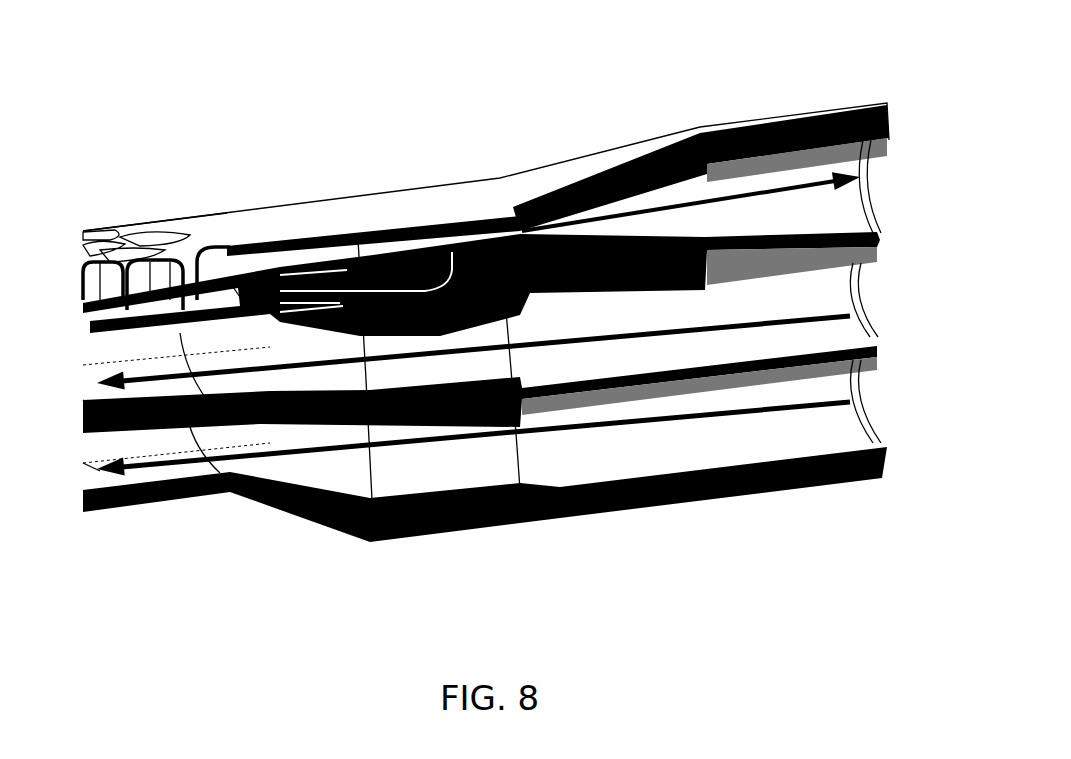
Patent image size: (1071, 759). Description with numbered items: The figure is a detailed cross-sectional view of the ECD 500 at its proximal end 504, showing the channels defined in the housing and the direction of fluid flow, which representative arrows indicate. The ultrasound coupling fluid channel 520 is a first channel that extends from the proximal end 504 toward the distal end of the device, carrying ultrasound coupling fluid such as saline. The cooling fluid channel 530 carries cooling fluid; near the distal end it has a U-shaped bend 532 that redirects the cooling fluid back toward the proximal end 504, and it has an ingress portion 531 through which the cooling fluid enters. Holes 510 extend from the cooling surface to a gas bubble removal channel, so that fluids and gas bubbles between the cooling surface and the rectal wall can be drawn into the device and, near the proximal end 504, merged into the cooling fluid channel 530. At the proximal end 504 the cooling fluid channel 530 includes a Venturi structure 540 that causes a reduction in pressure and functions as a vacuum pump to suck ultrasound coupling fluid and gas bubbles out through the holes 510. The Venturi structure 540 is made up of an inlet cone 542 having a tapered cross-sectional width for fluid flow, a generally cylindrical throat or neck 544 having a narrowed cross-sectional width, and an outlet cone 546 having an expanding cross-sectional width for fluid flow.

The ECD 500 is at (77, 80).
The proximal end 504 is at (915, 256).
The holes 510 is at (123, 228).
The ultrasound coupling fluid channel 520 is at (778, 443).
The cooling fluid channel 530 is at (75, 339).
The ingress portion 531 is at (902, 321).
The U-shaped bend 532 is at (910, 162).
The Venturi structure 540 is at (309, 62).
The inlet cone 542 is at (267, 226).
The throat or neck 544 is at (426, 213).
The outlet cone 546 is at (632, 135).